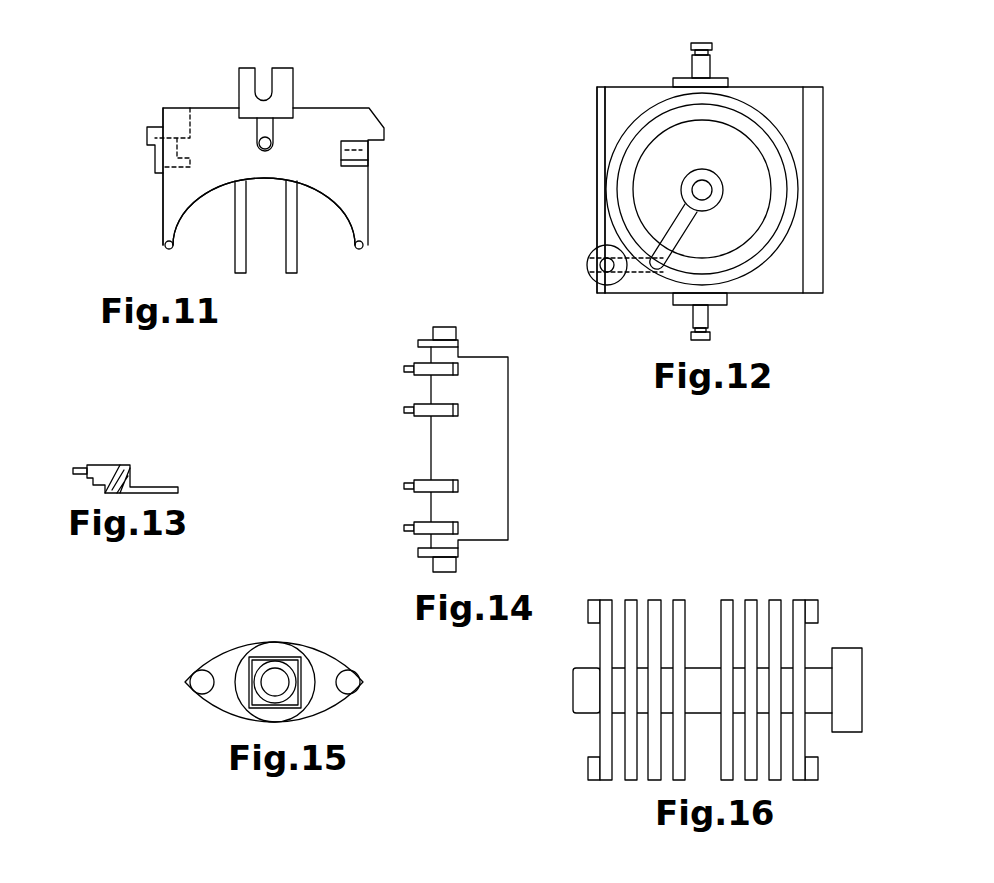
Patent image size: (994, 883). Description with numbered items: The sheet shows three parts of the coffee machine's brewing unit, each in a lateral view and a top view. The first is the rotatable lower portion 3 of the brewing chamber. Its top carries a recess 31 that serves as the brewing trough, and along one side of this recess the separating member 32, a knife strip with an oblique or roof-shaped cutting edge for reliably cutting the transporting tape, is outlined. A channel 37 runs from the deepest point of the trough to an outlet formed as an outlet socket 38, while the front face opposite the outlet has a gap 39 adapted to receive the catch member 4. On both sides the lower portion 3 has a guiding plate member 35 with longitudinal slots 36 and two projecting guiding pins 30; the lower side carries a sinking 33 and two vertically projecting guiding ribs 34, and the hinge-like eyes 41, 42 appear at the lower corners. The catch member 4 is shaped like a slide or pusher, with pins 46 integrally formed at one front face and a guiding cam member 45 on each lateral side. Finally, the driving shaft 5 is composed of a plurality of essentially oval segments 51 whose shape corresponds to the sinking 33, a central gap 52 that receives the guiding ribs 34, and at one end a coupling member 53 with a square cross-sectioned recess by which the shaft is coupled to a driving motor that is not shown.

In FIG. 11, the lower portion of the brewing chamber 3 is at (318, 128).
In FIG. 12, the lower portion of the brewing chamber 3 is at (778, 100).
In FIG. 12, the guiding pins 30 is at (700, 68).
In FIG. 12, the recess 31 is at (750, 165).
In FIG. 11, the separating member 32 is at (170, 100).
In FIG. 12, the separating member 32 is at (600, 122).
In FIG. 11, the sinking 33 is at (213, 242).
In FIG. 11, the guiding ribs 34 is at (288, 259).
In FIG. 11, the guiding plate member 35 is at (247, 88).
In FIG. 11, the longitudinal slots 36 is at (265, 74).
In FIG. 12, the channel 37 is at (671, 226).
In FIG. 11, the outlet socket 38 is at (150, 106).
In FIG. 12, the outlet socket 38 is at (605, 248).
In FIG. 11, the gap 39 is at (382, 160).
In FIG. 11, the left hinge eye 41 is at (164, 245).
In FIG. 11, the right hinge eye 42 is at (355, 249).
In FIG. 13, the catch member 4 is at (107, 452).
In FIG. 14, the catch member 4 is at (475, 452).
In FIG. 13, the guiding cam member 45 is at (128, 470).
In FIG. 14, the guiding cam member 45 is at (445, 333).
In FIG. 13, the pins 46 is at (81, 468).
In FIG. 14, the pins 46 is at (410, 482).
In FIG. 15, the driving shaft 5 is at (224, 668).
In FIG. 16, the driving shaft 5 is at (590, 690).
In FIG. 16, the segments 51 is at (677, 606).
In FIG. 16, the gap 52 is at (701, 604).
In FIG. 15, the coupling member 53 is at (275, 632).
In FIG. 16, the coupling member 53 is at (848, 660).